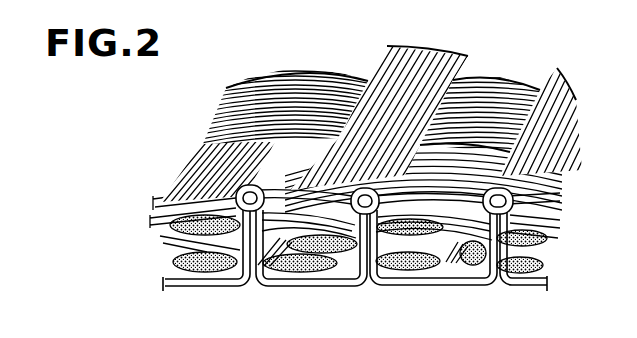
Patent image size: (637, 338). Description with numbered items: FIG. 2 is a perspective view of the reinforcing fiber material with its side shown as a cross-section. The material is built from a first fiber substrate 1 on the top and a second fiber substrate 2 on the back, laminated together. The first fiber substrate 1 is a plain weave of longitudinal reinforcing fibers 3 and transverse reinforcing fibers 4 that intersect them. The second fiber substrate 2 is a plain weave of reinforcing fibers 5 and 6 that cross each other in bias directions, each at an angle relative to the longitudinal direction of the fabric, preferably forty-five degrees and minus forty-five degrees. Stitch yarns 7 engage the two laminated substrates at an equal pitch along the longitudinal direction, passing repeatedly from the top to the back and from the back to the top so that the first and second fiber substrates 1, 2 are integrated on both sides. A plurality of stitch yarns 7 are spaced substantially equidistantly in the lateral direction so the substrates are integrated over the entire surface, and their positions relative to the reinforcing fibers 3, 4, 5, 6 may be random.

The first fiber substrate 1 is at (196, 152).
The second fiber substrate 2 is at (166, 252).
The longitudinal reinforcing fibers 3 is at (268, 96).
The transverse reinforcing fibers 4 is at (385, 80).
The reinforcing fibers 5 is at (295, 266).
The reinforcing fibers 6 is at (200, 270).
The stitch yarns 7 is at (205, 173).